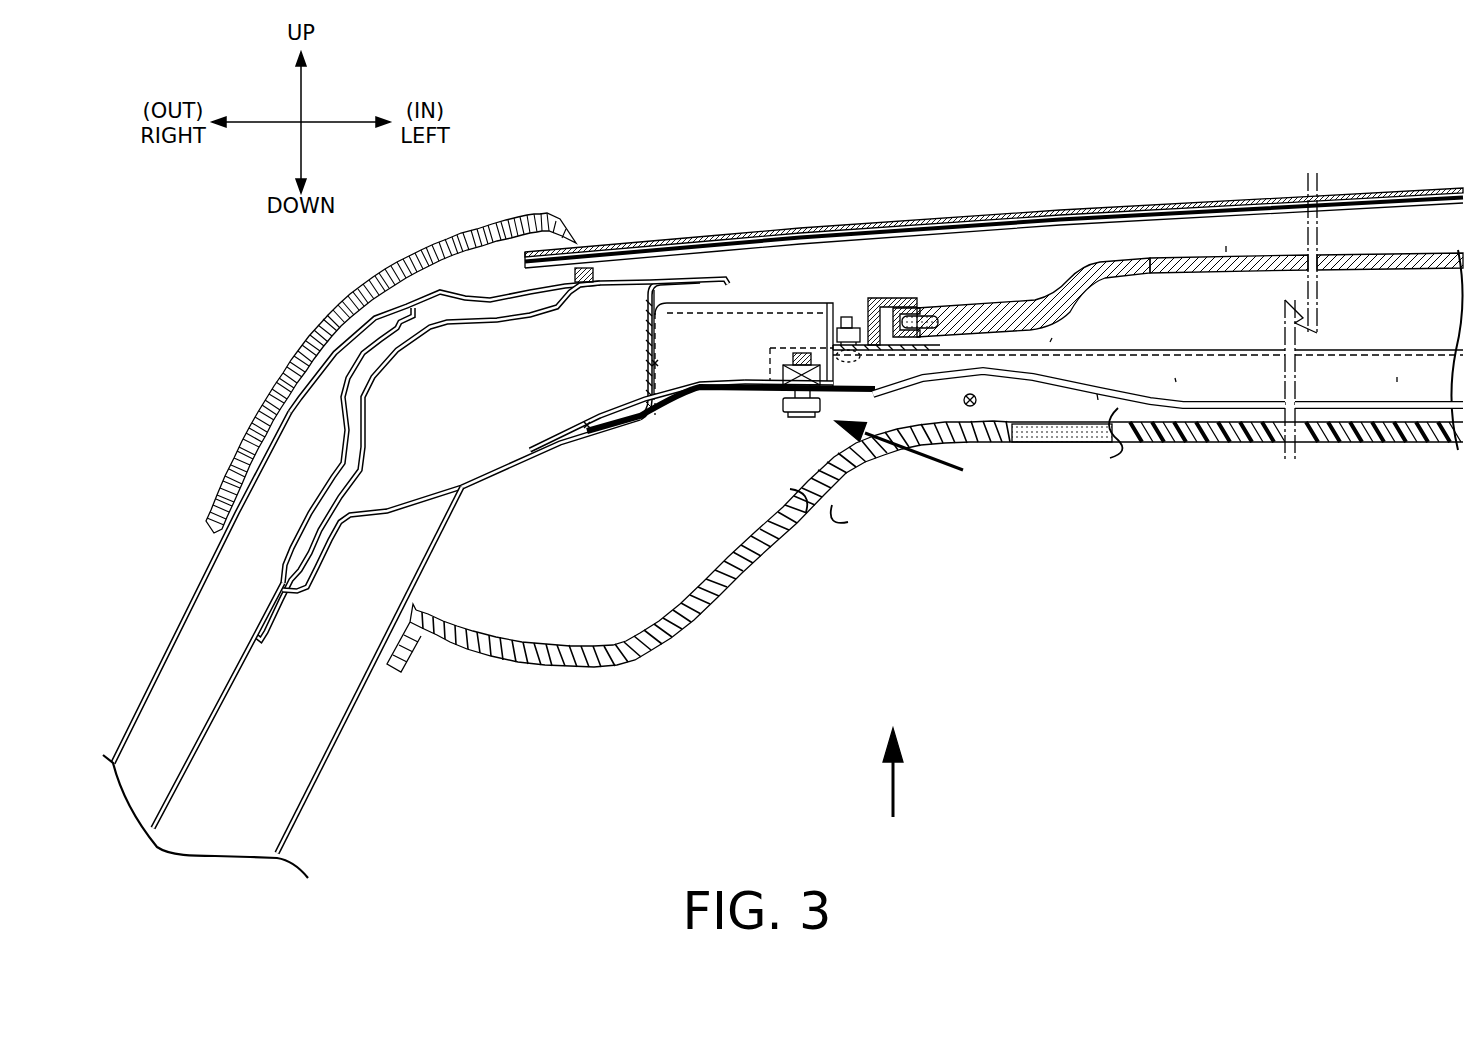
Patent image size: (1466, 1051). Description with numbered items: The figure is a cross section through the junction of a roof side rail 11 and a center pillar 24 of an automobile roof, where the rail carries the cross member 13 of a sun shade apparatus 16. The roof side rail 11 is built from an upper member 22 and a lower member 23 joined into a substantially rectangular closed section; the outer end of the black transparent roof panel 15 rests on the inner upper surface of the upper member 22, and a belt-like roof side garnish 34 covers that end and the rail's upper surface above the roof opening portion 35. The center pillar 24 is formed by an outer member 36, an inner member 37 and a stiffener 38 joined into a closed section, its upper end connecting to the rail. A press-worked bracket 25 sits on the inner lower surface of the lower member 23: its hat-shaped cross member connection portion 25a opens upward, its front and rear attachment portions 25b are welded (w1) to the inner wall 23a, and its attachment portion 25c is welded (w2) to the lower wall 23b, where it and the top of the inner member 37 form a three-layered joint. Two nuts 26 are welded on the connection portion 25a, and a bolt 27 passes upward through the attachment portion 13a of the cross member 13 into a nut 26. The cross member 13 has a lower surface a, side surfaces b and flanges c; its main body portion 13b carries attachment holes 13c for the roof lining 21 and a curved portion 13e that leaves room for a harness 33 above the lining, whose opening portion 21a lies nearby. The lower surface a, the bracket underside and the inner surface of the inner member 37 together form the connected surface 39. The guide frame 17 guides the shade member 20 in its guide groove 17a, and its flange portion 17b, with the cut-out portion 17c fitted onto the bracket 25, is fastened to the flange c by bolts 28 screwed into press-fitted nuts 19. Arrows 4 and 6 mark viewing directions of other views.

The roof side rail 11 is at (435, 324).
The cross member 13 is at (1253, 350).
The attachment portion 13a is at (850, 397).
The main body portion 13b is at (1397, 377).
The attachment hole 13c is at (1420, 407).
The curved portion 13e is at (1010, 378).
The roof panel 15 is at (944, 214).
The sun shade apparatus 16 is at (1226, 250).
The guide frame 17 is at (909, 300).
The guide groove 17a is at (870, 298).
The flange portion 17b is at (850, 350).
The cut-out portion 17c is at (828, 348).
The nut 19 is at (846, 316).
The shade member 20 is at (1127, 258).
The roof lining 21 is at (747, 586).
The opening portion 21a is at (1017, 440).
The upper member 22 is at (350, 380).
The lower member 23 is at (394, 511).
The inner wall 23a is at (646, 324).
The lower wall 23b is at (490, 472).
The center pillar 24 is at (158, 680).
The bracket 25 is at (755, 300).
The cross member connection portion 25a is at (757, 392).
The attachment portion 25b is at (647, 347).
The attachment portion 25c is at (573, 440).
The nut 26 is at (785, 373).
The bolt 27 is at (800, 418).
The bolt 28 is at (840, 326).
The harness 33 is at (978, 402).
The roof side garnish 34 is at (343, 330).
The roof opening portion 35 is at (743, 300).
The outer member 36 is at (190, 605).
The inner member 37 is at (334, 742).
The stiffener 38 is at (226, 690).
The connected surface 39 is at (649, 406).
The weld w1 is at (655, 362).
The weld w2 is at (587, 424).
The lower surface a is at (1097, 394).
The side surface b is at (1175, 378).
The flange c is at (1050, 342).
The arrow 4 is at (892, 798).
The arrow 6 is at (914, 459).